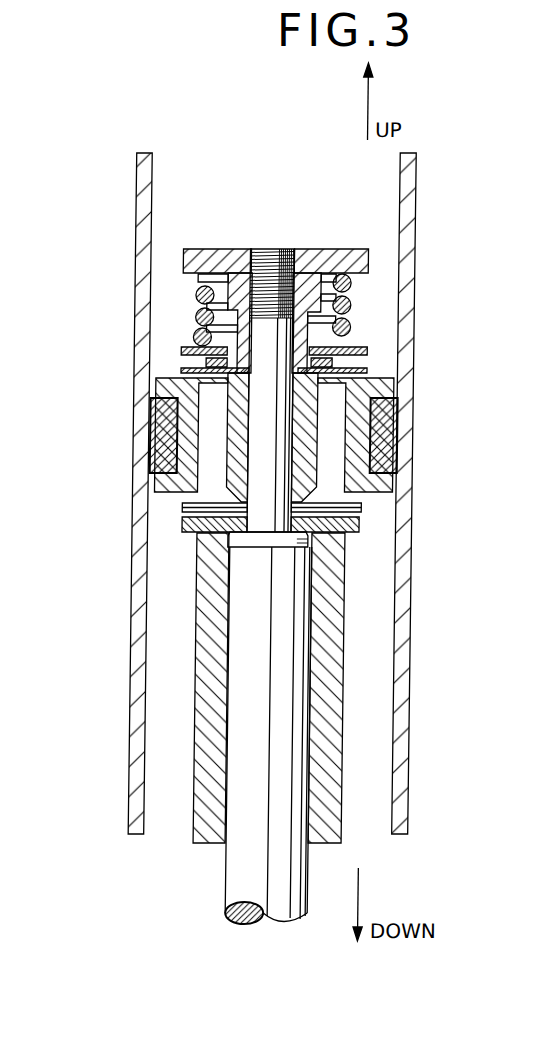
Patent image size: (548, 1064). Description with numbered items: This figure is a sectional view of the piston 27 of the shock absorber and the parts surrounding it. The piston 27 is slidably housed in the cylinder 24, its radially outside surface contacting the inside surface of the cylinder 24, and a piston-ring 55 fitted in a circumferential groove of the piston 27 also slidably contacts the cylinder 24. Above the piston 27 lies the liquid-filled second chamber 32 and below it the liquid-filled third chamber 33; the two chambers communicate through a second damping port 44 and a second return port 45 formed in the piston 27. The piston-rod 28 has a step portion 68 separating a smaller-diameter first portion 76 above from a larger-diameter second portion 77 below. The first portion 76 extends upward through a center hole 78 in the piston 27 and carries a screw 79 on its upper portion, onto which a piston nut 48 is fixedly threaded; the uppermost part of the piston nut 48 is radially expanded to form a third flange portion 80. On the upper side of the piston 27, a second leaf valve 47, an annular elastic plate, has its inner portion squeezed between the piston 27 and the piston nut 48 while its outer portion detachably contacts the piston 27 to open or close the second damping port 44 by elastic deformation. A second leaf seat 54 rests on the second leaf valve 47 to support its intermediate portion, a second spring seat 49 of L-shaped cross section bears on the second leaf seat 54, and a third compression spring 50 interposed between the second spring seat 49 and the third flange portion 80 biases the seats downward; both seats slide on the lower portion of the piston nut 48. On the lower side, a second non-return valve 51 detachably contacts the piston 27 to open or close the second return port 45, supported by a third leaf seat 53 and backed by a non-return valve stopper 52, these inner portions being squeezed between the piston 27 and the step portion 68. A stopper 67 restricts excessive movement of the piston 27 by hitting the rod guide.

The cylinder 24 is at (437, 493).
The piston 27 is at (276, 422).
The piston-rod 28 is at (242, 870).
The second chamber 32 is at (436, 493).
The third chamber 33 is at (387, 645).
The second damping port 44 is at (212, 418).
The second return port 45 is at (338, 415).
The second leaf valve 47 is at (360, 368).
The piston nut 48 is at (270, 344).
The second spring seat 49 is at (360, 347).
The third compression spring 50 is at (198, 297).
The second non-return valve 51 is at (184, 507).
The non-return valve stopper 52 is at (185, 525).
The third leaf seat 53 is at (313, 513).
The second leaf seat 54 is at (196, 358).
The piston-ring 55 is at (387, 445).
The stopper 67 is at (341, 682).
The step portion 68 is at (362, 535).
The first portion 76 is at (213, 537).
The second portion 77 is at (245, 622).
The center hole 78 is at (256, 464).
The screw 79 is at (320, 390).
The third flange portion 80 is at (185, 262).